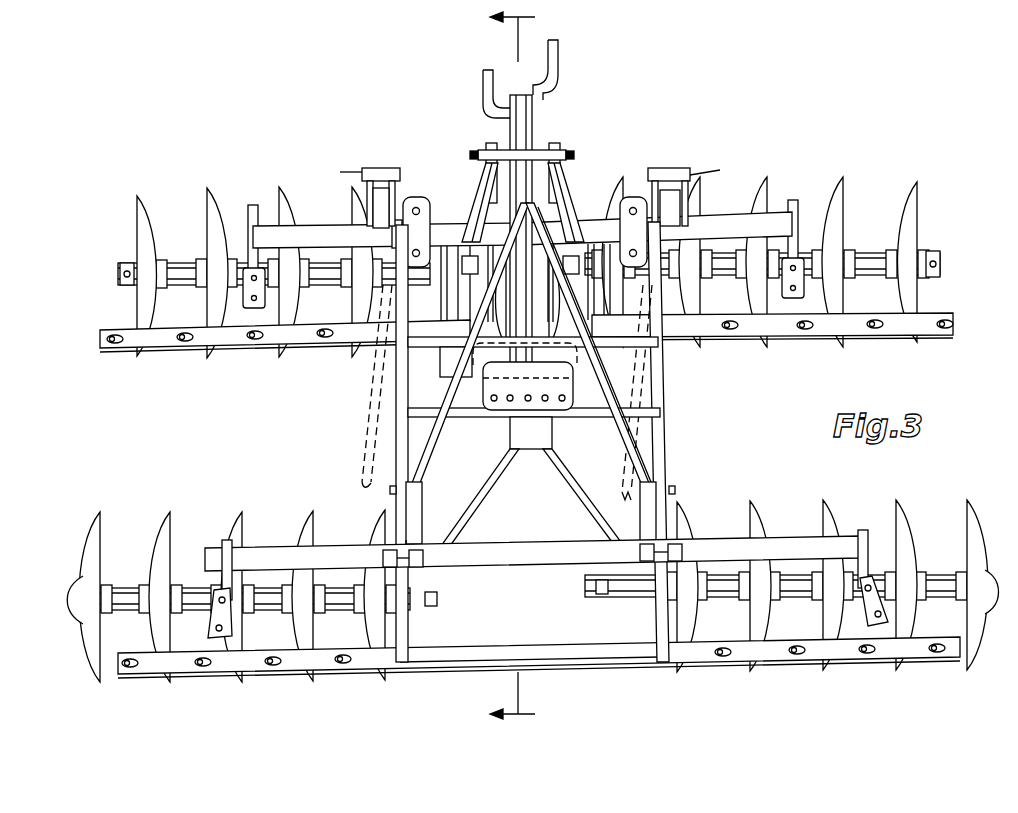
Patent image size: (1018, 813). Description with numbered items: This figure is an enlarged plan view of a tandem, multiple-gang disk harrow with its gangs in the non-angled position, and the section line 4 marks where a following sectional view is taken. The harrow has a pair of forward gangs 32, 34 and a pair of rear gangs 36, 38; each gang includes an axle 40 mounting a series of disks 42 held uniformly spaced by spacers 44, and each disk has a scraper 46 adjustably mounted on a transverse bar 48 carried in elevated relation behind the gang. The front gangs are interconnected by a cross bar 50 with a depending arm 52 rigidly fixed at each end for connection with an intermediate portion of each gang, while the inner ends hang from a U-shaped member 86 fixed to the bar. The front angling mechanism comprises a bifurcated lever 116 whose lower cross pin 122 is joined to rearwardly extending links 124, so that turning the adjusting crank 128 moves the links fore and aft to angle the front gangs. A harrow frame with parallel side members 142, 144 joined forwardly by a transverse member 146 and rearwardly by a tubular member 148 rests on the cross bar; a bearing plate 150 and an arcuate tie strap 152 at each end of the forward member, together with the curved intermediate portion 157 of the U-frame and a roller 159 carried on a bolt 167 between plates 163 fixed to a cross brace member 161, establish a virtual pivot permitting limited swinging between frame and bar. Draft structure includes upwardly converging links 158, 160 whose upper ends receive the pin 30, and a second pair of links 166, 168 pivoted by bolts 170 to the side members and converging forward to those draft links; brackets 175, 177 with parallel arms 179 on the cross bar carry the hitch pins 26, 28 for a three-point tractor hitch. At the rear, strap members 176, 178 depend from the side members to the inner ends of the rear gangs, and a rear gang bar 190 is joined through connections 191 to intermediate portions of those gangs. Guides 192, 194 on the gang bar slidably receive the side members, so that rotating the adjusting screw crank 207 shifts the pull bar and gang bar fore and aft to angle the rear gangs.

The section line 4- 4 is at (522, 366).
The transverse pin 26 is at (376, 166).
The transverse pin 28 is at (688, 166).
The pin 30 is at (561, 147).
The forward gang 32 is at (181, 237).
The forward gang 34 is at (878, 207).
The rear gang 36 is at (272, 621).
The rear gang 38 is at (798, 611).
The axle 40 is at (121, 285).
The disk 42 is at (292, 210).
The spacer 44 is at (188, 286).
The scraper 46 is at (350, 321).
The transverse bar 48 is at (826, 341).
The cross bar 50 is at (725, 216).
The depending arm 52 is at (254, 222).
The U-shaped member 86 is at (455, 360).
The bifurcated lever 116 is at (560, 172).
The cross pin 122 is at (480, 153).
The rearwardly extending links 124 is at (482, 196).
The adjusting crank 128 is at (482, 92).
The side member 142 is at (395, 432).
The side member 144 is at (669, 441).
The transverse member 146 is at (622, 216).
The tubular member 148 is at (540, 661).
The bearing plate 150 is at (415, 197).
The tie strap 152 is at (392, 235).
The curved intermediate portion 157 is at (576, 392).
The link 158 is at (430, 210).
The roller 159 is at (582, 356).
The link 160 is at (572, 200).
The cross brace member 161 is at (482, 418).
The plate 163 is at (585, 418).
The link 166 is at (426, 470).
The bolt 167 is at (652, 358).
The link 168 is at (636, 467).
The bolt 170 is at (422, 492).
The bracket 175 is at (372, 205).
The strap member 176 is at (413, 530).
The bracket 177 is at (668, 208).
The strap member 178 is at (616, 517).
The parallel arms 179 is at (529, 165).
The gang bar 190 is at (527, 544).
The connection 191 is at (197, 572).
The guide 192 is at (428, 558).
The guide 194 is at (687, 551).
The adjusting screw crank 207 is at (562, 73).